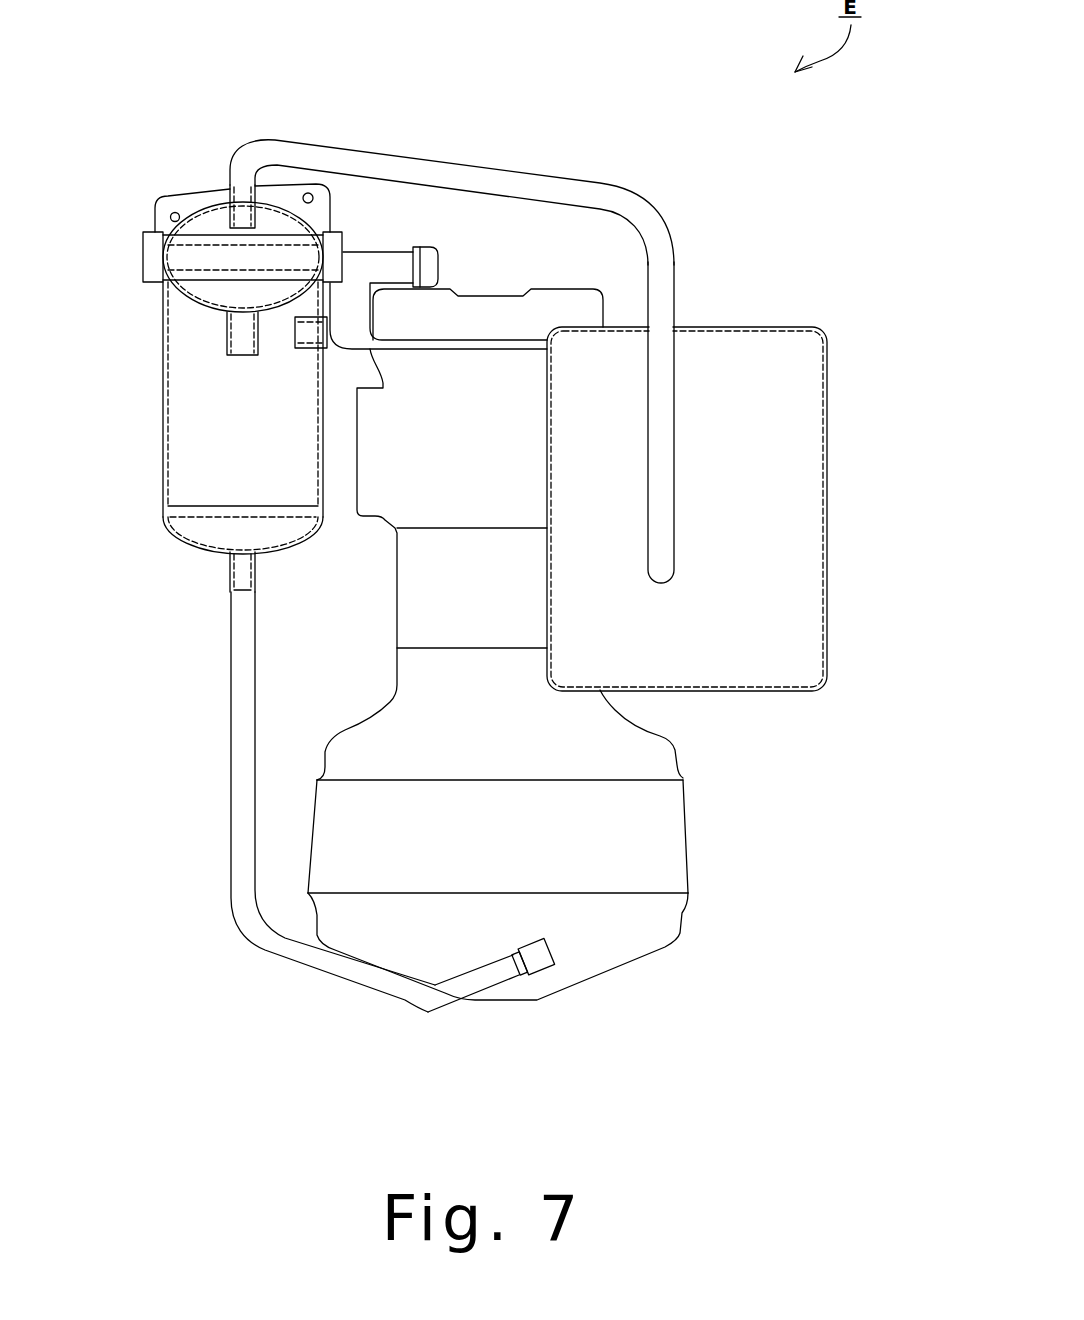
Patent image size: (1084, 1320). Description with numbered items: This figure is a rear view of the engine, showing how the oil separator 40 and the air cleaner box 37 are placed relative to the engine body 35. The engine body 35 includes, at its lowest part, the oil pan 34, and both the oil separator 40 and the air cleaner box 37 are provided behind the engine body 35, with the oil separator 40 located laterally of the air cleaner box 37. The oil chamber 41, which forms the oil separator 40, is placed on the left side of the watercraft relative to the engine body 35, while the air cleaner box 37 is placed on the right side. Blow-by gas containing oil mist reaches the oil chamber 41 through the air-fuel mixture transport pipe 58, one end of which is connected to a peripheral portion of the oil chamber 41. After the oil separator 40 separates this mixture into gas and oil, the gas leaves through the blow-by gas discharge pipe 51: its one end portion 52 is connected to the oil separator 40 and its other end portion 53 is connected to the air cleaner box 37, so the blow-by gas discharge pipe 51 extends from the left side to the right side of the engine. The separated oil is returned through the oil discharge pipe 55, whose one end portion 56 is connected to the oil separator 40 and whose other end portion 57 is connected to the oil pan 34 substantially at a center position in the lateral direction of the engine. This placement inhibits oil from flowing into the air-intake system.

The oil pan 34 is at (617, 968).
The engine body 35 is at (560, 250).
The air cleaner box 37 is at (827, 433).
The oil separator 40 is at (192, 193).
The oil chamber 41 is at (163, 378).
The blow-by gas discharge pipe 51 is at (475, 177).
The one end portion of the blow-by gas discharge pipe 52 is at (227, 218).
The other end portion of the blow-by gas discharge pipe 53 is at (675, 543).
The oil discharge pipe 55 is at (247, 933).
The one end portion of the oil discharge pipe 56 is at (224, 576).
The other end portion of the oil discharge pipe 57 is at (517, 983).
The air-fuel mixture transport pipe 58 is at (385, 260).